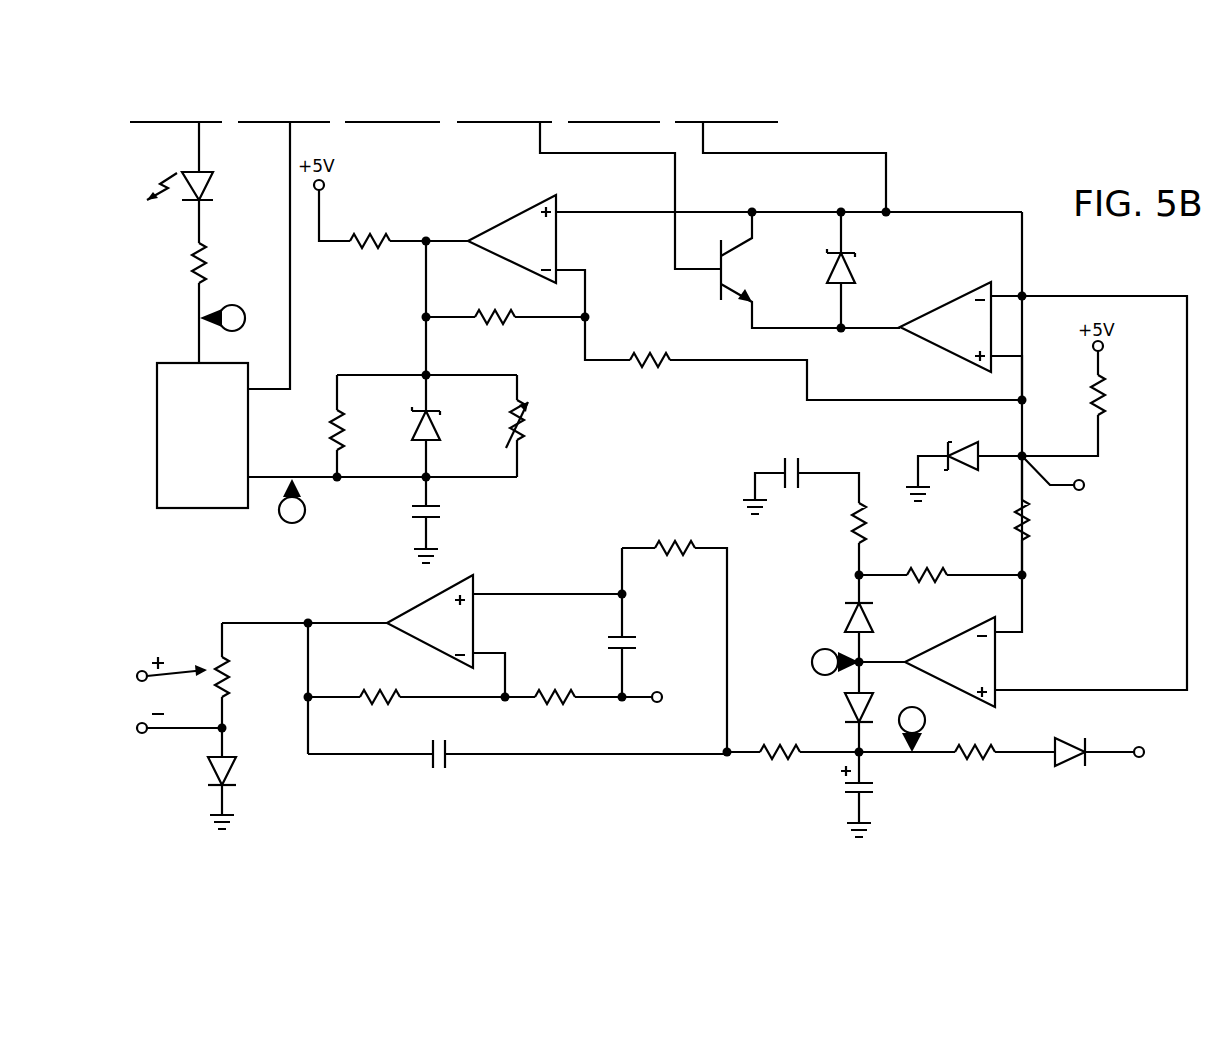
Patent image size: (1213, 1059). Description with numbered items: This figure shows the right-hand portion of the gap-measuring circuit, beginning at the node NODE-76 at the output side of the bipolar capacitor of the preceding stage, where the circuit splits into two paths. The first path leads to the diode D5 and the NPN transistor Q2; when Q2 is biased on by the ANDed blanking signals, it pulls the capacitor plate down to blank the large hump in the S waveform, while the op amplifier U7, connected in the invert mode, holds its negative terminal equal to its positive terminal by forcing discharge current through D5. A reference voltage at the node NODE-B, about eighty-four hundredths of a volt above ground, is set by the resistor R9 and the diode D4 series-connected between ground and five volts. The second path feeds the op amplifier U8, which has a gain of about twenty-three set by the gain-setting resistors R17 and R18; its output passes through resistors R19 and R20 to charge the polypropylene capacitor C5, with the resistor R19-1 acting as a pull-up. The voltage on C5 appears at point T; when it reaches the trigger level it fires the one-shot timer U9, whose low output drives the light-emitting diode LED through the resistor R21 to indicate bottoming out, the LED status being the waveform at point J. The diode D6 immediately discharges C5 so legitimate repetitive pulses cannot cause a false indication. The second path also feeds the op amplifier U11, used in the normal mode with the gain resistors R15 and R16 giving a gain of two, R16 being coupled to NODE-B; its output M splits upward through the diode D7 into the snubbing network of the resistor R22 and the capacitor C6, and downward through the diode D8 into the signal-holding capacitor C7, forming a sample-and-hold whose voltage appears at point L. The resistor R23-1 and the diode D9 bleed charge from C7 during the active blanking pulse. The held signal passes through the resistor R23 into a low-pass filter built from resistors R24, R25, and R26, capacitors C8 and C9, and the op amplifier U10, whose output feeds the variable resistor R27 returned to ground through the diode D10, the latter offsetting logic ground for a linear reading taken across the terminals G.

The light-emitting diode LED is at (204, 182).
The resistor R21 is at (191, 262).
The point J is at (222, 318).
The one-shot timer U9 is at (202, 435).
The point T is at (292, 501).
The resistor R19 is at (332, 410).
The diode D6 is at (418, 442).
The resistor R20 is at (510, 438).
The bipolar polypropylene capacitor C5 is at (414, 506).
The pull-up resistor R19-1 is at (366, 236).
The op amplifier U8 is at (745, 256).
The gain-setting resistor R17 is at (492, 305).
The gain-setting resistor R18 is at (648, 350).
The NPN transistor Q2 is at (735, 252).
The diode D5 is at (850, 264).
The op amplifier U7 is at (1014, 486).
The node 76 NODE-76 is at (890, 208).
The resistor R9 is at (1090, 382).
The diode D4 is at (962, 450).
The node B NODE-B is at (1092, 476).
The gain resistor R16 is at (1016, 512).
The capacitor C6 is at (800, 480).
The resistor R22 is at (852, 530).
The gain resistor R15 is at (920, 568).
The diode D7 is at (847, 615).
The output M is at (835, 662).
The op amplifier U11 is at (927, 662).
The diode D8 is at (845, 705).
The point L is at (912, 729).
The resistor R23 is at (790, 742).
The resistor R23-1 is at (960, 745).
The diode D9 is at (1068, 764).
The signal voltage holding capacitor C7 is at (838, 794).
The op amplifier U10 is at (465, 636).
The resistor R24 is at (662, 540).
The capacitor C8 is at (612, 634).
The resistor R25 is at (380, 688).
The resistor R26 is at (568, 688).
The capacitor C9 is at (450, 744).
The variable resistor R27 is at (212, 640).
The output terminals G+ and G− G is at (171, 698).
The diode D10 is at (238, 774).